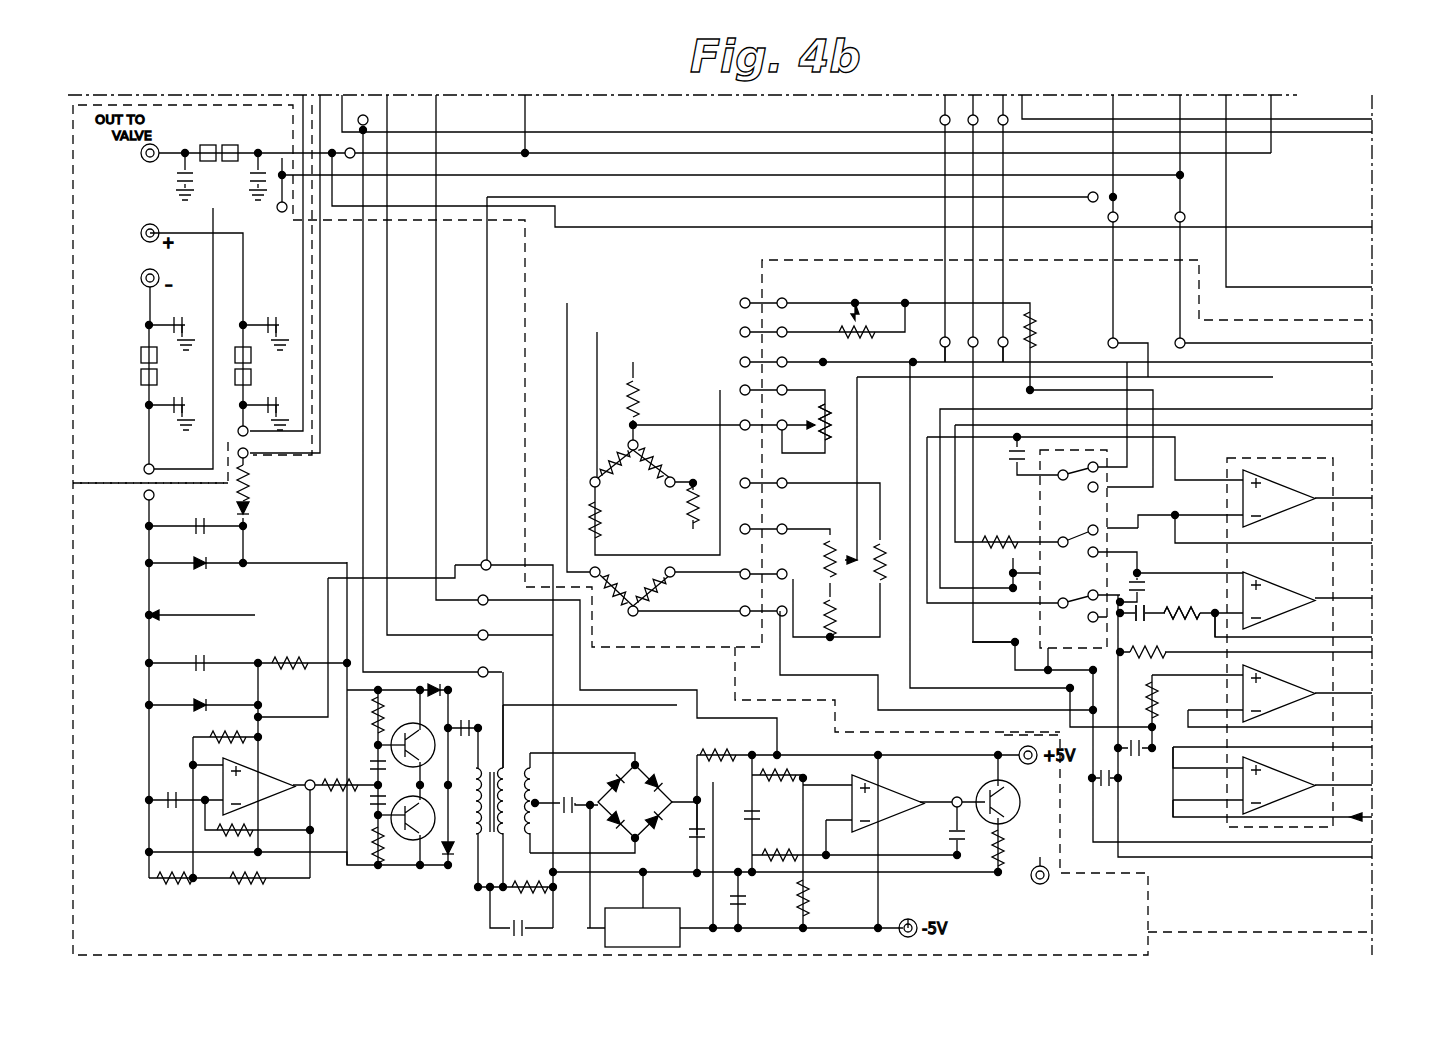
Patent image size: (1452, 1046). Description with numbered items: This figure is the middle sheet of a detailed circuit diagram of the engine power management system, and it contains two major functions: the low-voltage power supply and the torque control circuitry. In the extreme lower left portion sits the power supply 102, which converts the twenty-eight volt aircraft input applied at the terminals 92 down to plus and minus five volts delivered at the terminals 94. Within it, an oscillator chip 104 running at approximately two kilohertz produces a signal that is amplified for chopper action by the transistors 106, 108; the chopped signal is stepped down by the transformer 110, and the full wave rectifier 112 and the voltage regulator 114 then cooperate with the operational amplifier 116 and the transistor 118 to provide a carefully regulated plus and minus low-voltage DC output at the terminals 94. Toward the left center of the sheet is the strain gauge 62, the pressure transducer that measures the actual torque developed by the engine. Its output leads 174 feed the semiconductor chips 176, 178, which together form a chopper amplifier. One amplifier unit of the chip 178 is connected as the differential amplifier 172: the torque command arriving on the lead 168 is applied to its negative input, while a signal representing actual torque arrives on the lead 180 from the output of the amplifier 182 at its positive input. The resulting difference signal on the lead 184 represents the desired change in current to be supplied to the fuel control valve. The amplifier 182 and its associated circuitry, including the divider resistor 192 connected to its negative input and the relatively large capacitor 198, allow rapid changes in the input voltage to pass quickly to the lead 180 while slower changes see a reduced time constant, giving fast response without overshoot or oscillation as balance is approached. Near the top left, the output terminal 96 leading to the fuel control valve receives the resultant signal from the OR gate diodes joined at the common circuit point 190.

The strain gauge 62 is at (510, 420).
The input terminals 92 is at (141, 278).
The output terminals 94 is at (920, 919).
The output terminal 96 is at (144, 160).
The power supply 102 is at (195, 503).
The oscillator chip 104 is at (223, 788).
The transistor 106 is at (400, 744).
The transistor 108 is at (410, 841).
The transformer 110 is at (521, 765).
The full wave rectifier 112 is at (635, 778).
The voltage regulator 114 is at (642, 927).
The operational amplifier 116 is at (896, 812).
The transistor 118 is at (985, 785).
The lead 168 is at (1182, 825).
The operational amplifier 172 is at (1277, 786).
The output leads 174 is at (889, 383).
The semiconductor chip 176 is at (1040, 510).
The semiconductor chip 178 is at (1339, 484).
The lead 180 is at (1348, 608).
The amplifier 182 is at (1282, 570).
The lead 184 is at (1365, 786).
The common circuit point 190 is at (282, 158).
The resistor 192 is at (1190, 608).
The capacitor 198 is at (1150, 628).